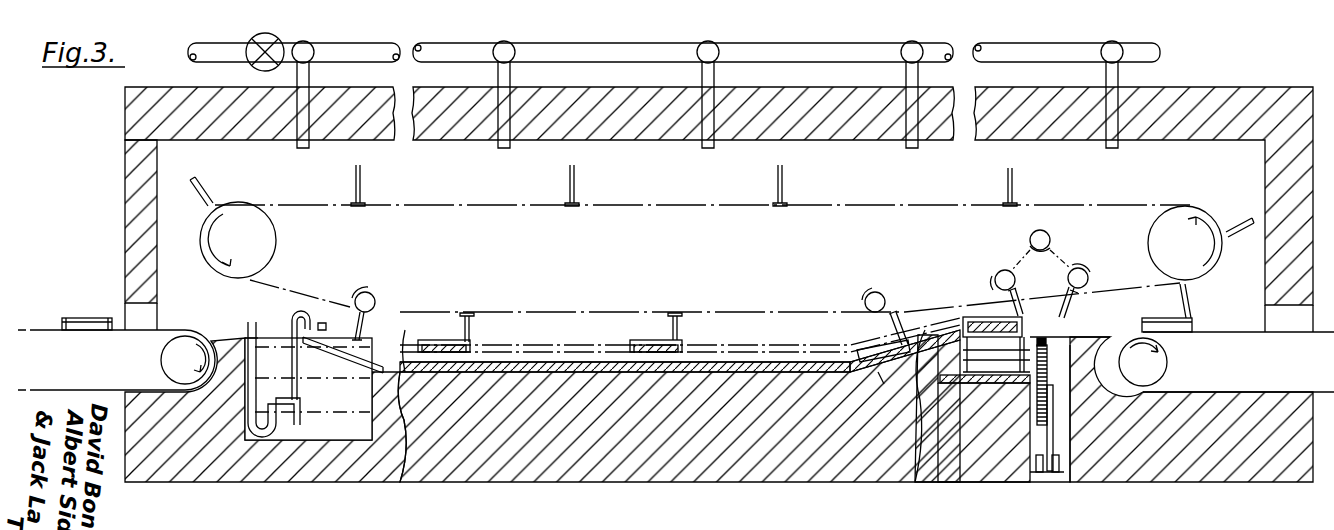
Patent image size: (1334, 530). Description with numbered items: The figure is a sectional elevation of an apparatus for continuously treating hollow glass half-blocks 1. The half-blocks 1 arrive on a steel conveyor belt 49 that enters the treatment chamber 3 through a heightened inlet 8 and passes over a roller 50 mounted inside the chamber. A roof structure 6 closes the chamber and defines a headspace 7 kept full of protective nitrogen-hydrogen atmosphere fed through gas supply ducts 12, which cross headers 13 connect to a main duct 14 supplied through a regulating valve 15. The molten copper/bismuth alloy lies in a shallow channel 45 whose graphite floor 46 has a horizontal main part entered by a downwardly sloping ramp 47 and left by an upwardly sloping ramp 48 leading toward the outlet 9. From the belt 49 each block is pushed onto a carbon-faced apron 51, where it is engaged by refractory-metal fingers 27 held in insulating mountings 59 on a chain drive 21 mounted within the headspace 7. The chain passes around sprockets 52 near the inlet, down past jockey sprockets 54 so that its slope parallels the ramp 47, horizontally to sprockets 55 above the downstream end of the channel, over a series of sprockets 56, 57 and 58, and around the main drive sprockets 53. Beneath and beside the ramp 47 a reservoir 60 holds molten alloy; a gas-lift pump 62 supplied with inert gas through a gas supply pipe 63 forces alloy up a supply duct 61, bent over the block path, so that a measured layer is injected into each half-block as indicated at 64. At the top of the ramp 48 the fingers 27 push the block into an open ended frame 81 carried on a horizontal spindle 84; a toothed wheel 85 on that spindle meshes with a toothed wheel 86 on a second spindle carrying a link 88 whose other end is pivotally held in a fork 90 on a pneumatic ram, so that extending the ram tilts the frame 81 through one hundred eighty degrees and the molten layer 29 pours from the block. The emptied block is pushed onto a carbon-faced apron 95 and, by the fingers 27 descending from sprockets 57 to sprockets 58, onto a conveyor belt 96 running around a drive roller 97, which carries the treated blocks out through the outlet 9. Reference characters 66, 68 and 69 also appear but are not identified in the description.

The hollow glass half-block 1 is at (62, 320).
The treatment chamber 3 is at (718, 430).
The roof structure 6 is at (603, 108).
The headspace 7 is at (735, 274).
The inlet 8 is at (130, 313).
The outlet 9 is at (1285, 319).
The gas supply duct 12 is at (308, 75).
The cross header 13 is at (504, 41).
The main duct 14 is at (570, 45).
The regulating valve 15 is at (263, 39).
The chain drive 21 is at (604, 312).
The finger 27 is at (206, 181).
The molten layer 29 is at (444, 334).
The shallow channel 45 is at (553, 352).
The graphite floor 46 is at (377, 441).
The downwardly sloping ramp 47 is at (405, 337).
The upwardly sloping ramp 48 is at (880, 384).
The steel conveyor belt 49 is at (53, 331).
The roller 50 is at (176, 363).
The carbon-faced apron 51 is at (247, 337).
The sprocket 52 is at (260, 242).
The main drive sprocket 53 is at (1183, 218).
The jockey sprocket 54 is at (376, 299).
The sprocket 55 is at (874, 292).
The sprocket 56 is at (1003, 277).
The sprocket 57 is at (1049, 241).
The sprocket 58 is at (1082, 272).
The insulating mounting 59 is at (214, 208).
The reservoir 60 is at (321, 435).
The supply duct 61 is at (294, 318).
The gas-lift pump 62 is at (276, 399).
The gas supply pipe 63 is at (257, 400).
The alloy injection 64 is at (322, 323).
The element 66 is at (505, 529).
The element 68 is at (687, 525).
The element 69 is at (415, 529).
The open ended frame 81 is at (968, 310).
The horizontal spindle 84 is at (990, 357).
The toothed wheel 85 is at (1042, 338).
The toothed wheel 86 is at (1035, 415).
The link 88 is at (1050, 432).
The fork 90 is at (1040, 462).
The apron 95 is at (1100, 335).
The conveyor belt 96 is at (1227, 333).
The drive roller 97 is at (1168, 375).